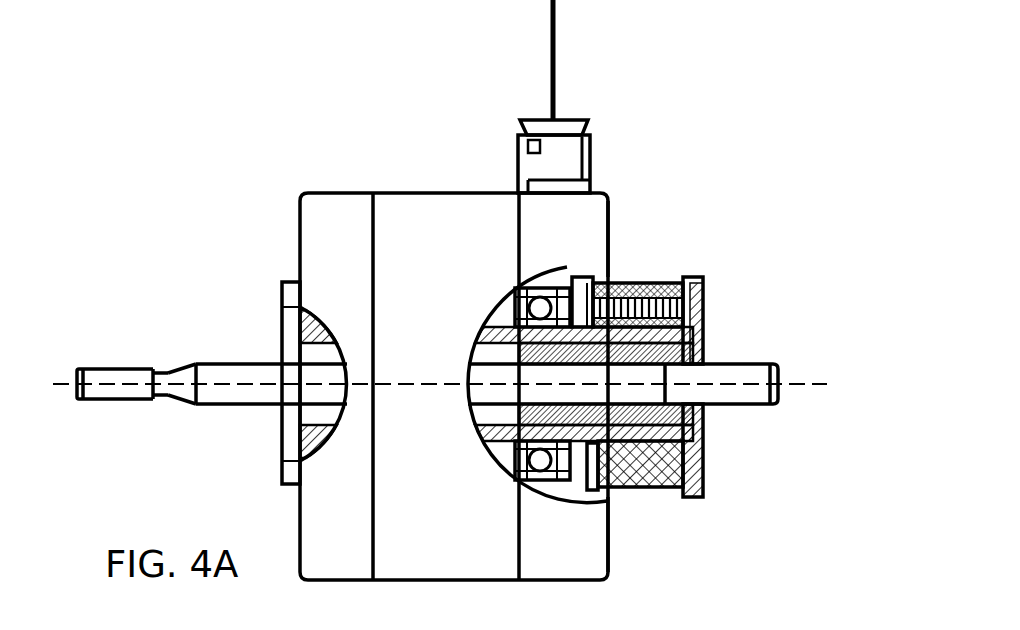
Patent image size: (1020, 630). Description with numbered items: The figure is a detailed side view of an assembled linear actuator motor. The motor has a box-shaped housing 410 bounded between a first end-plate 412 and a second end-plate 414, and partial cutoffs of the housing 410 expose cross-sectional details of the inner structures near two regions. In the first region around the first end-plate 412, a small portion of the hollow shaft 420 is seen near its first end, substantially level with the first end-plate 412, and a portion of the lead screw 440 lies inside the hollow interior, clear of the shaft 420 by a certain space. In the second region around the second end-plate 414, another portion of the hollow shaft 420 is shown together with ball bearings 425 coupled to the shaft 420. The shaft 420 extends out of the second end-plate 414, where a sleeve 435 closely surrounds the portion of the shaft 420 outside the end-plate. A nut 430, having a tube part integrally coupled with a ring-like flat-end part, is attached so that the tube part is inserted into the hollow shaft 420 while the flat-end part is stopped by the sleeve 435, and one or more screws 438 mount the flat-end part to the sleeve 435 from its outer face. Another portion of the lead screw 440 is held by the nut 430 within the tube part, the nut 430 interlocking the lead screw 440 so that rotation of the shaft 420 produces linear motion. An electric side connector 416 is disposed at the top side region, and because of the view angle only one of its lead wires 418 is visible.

The housing 410 is at (412, 212).
The first end-plate 412 is at (298, 238).
The second end-plate 414 is at (608, 267).
The electric side connector 416 is at (517, 143).
The lead wire 418 is at (557, 72).
The hollow shaft 420 is at (305, 333).
The ball bearings 425 is at (570, 288).
The nut 430 is at (703, 455).
The sleeve 435 is at (640, 282).
The mounting screw 438 is at (702, 302).
The lead screw 440 is at (228, 393).